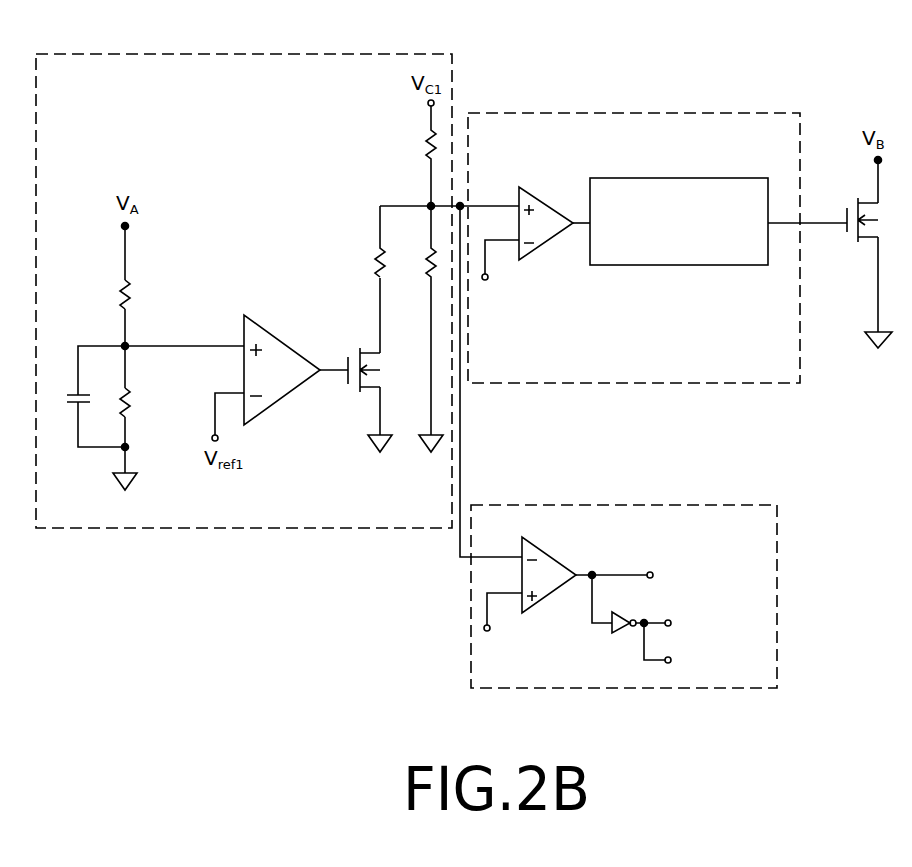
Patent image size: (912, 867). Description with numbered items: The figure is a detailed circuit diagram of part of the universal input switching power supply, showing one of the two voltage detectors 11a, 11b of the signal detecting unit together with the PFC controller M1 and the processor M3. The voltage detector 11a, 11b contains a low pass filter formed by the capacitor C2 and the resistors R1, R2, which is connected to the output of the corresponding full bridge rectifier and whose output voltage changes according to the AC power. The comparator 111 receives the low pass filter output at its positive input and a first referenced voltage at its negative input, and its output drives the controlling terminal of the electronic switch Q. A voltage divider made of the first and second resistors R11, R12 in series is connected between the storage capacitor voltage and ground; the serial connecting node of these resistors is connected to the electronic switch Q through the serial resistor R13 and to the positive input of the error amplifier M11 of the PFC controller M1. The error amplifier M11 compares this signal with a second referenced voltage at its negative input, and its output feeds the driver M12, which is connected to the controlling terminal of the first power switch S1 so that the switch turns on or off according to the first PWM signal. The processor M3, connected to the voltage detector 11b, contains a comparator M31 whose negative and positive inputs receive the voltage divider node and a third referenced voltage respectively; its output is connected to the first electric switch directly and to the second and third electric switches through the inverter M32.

The voltage detector 11a is at (262, 265).
The voltage detector 11b is at (322, 54).
The comparator 111 is at (280, 353).
The PFC controller M1 is at (688, 113).
The error amplifier M11 is at (527, 250).
The driver M12 is at (676, 183).
The processor M3 is at (716, 505).
The comparator M31 is at (553, 555).
The inverter M32 is at (622, 634).
The resistor of low pass filter R1 is at (139, 294).
The resistor of low pass filter R2 is at (139, 402).
The capacitor of low pass filter C2 is at (96, 396).
The electronic switch Q is at (356, 365).
The first resistor R11 is at (413, 156).
The second resistor R12 is at (416, 329).
The serial resistor R13 is at (359, 241).
The first power switch S1 is at (879, 254).